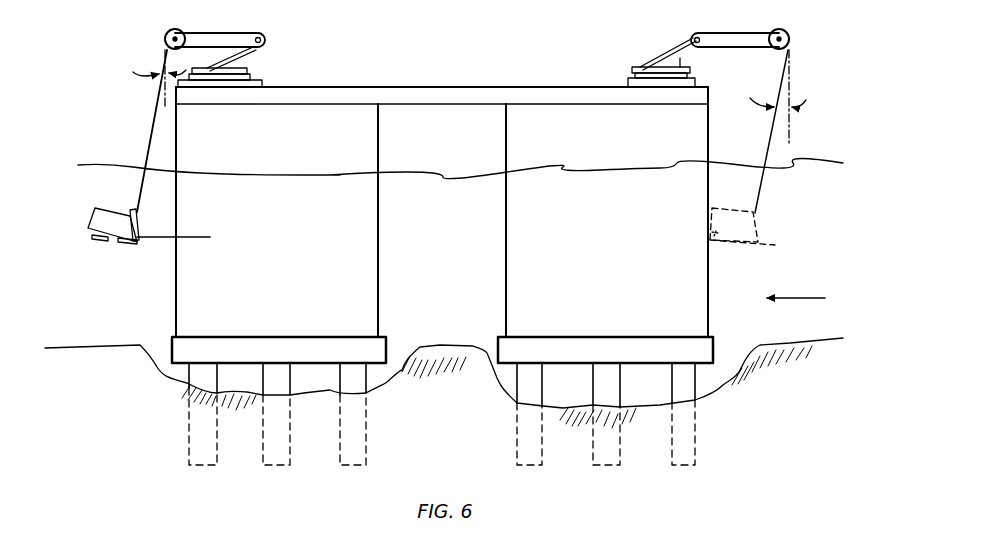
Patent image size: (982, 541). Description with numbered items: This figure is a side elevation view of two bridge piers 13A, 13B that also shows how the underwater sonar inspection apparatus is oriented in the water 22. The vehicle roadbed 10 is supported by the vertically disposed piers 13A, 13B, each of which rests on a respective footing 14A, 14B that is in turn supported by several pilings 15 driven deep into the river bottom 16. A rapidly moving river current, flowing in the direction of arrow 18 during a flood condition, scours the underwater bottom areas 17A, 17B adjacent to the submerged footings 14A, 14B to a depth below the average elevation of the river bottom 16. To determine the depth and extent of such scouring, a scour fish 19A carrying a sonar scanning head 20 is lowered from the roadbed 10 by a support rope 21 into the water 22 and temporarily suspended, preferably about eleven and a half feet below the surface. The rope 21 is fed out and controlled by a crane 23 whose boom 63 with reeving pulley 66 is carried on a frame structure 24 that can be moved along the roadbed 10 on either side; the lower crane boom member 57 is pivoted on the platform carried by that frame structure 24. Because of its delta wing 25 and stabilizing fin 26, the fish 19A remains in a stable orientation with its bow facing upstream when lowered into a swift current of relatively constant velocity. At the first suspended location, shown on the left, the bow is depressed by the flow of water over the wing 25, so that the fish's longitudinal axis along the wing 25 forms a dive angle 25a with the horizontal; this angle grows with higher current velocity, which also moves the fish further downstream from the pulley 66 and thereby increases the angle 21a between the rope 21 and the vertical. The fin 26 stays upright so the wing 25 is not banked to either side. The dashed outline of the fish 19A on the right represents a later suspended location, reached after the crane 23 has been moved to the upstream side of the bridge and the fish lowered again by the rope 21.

The vehicle roadbed 10 is at (453, 98).
The pier 13A is at (379, 236).
The pier 13B is at (708, 147).
The footing 14A is at (386, 338).
The footing 14B is at (715, 340).
The pilings 15 is at (217, 465).
The river bottom 16 is at (140, 346).
The underwater bottom area 17A is at (165, 378).
The right excavation 17B is at (739, 386).
The arrow 18 is at (795, 299).
The scour fish 19A is at (86, 222).
The sonar scanning head 20 is at (93, 242).
The support rope 21 is at (147, 133).
The angle 21a is at (163, 100).
The water 22 is at (443, 188).
The crane 23 is at (266, 70).
The frame structure 24 is at (263, 87).
The delta wing 25 is at (158, 231).
The dive angle 25a is at (138, 260).
The stabilizing fin 26 is at (117, 218).
The lower crane boom member 57 is at (250, 62).
The boom 63 is at (233, 40).
The reeving pulley 66 is at (163, 34).